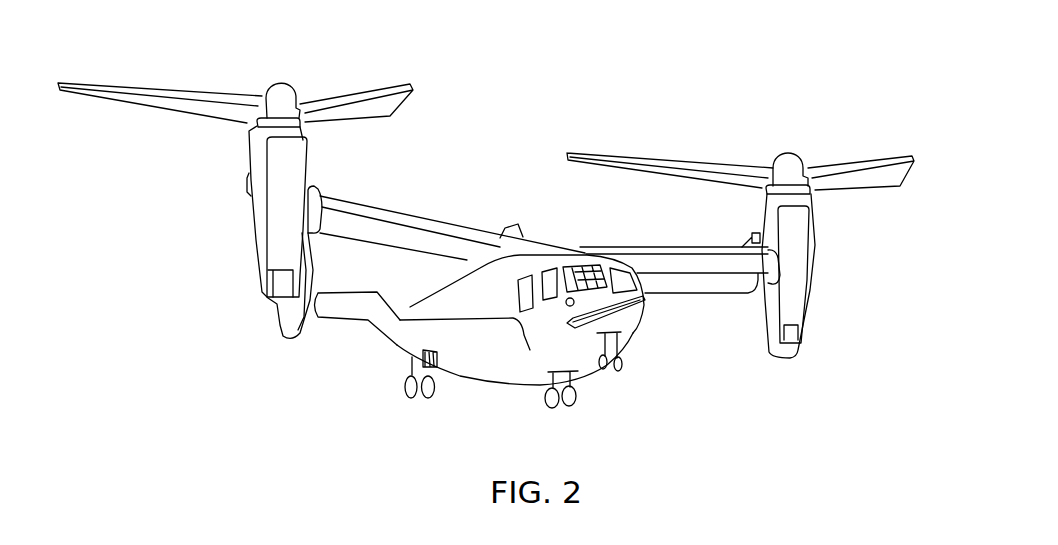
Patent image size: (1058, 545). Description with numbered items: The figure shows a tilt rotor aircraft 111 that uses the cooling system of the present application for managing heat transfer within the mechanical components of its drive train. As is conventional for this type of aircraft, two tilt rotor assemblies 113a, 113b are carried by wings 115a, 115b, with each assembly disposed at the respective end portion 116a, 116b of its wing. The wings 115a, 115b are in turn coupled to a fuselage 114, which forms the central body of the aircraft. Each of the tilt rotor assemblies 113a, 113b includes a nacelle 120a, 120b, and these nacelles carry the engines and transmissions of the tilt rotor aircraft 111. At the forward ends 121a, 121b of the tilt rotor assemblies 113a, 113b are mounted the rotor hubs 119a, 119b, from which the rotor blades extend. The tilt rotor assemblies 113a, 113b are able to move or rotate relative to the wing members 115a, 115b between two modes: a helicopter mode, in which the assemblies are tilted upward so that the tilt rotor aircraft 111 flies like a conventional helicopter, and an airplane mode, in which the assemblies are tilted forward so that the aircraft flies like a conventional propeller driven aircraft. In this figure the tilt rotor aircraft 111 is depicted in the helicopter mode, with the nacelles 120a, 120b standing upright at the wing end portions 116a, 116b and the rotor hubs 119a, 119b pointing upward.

The tilt rotor aircraft 111 is at (363, 355).
The tilt rotor assembly 113a is at (820, 278).
The tilt rotor assembly 113b is at (238, 232).
The fuselage 114 is at (512, 377).
The wing 115a is at (670, 245).
The wing 115b is at (400, 213).
The end portion of wing 116a is at (753, 308).
The end portion of wing 116b is at (328, 183).
The rotor hub 119a is at (807, 160).
The rotor hub 119b is at (268, 93).
The nacelle 120a is at (803, 338).
The nacelle 120b is at (263, 290).
The forward end of tilt rotor assembly 121a is at (813, 200).
The forward end of tilt rotor assembly 121b is at (250, 135).